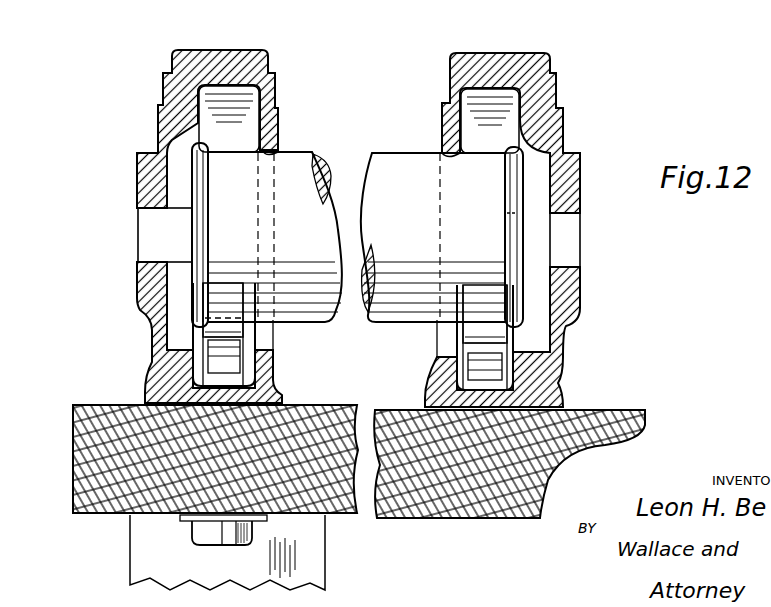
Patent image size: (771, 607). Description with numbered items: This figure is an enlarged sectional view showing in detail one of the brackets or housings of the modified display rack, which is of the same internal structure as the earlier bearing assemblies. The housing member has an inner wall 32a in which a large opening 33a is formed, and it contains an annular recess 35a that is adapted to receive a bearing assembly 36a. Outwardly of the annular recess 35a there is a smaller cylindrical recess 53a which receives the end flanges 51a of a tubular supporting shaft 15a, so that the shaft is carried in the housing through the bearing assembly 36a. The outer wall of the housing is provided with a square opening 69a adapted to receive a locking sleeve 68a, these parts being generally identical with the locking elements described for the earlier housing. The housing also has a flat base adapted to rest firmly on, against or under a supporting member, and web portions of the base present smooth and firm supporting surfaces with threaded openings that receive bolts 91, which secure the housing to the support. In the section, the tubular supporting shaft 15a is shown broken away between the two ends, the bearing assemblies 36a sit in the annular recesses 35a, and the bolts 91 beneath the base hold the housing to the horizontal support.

The annular recess 35a is at (265, 50).
The inner wall 32a is at (278, 95).
The large opening 33a is at (278, 133).
The tubular supporting shaft 15a is at (313, 153).
The end flanges 51a is at (200, 170).
The square opening 69a is at (139, 212).
The locking sleeve 68a is at (152, 242).
The smaller cylindrical recess 53a is at (183, 336).
The bearing assembly 36a is at (233, 328).
The bolts 91 is at (210, 538).